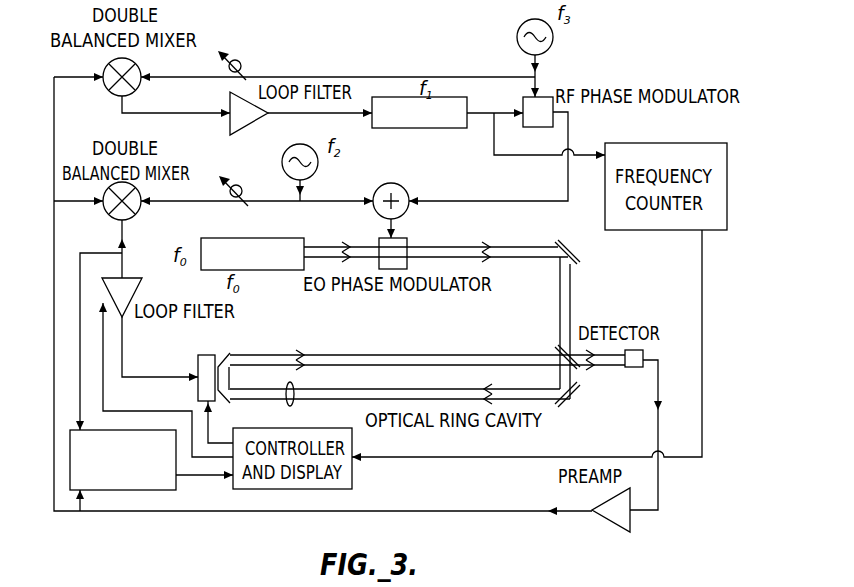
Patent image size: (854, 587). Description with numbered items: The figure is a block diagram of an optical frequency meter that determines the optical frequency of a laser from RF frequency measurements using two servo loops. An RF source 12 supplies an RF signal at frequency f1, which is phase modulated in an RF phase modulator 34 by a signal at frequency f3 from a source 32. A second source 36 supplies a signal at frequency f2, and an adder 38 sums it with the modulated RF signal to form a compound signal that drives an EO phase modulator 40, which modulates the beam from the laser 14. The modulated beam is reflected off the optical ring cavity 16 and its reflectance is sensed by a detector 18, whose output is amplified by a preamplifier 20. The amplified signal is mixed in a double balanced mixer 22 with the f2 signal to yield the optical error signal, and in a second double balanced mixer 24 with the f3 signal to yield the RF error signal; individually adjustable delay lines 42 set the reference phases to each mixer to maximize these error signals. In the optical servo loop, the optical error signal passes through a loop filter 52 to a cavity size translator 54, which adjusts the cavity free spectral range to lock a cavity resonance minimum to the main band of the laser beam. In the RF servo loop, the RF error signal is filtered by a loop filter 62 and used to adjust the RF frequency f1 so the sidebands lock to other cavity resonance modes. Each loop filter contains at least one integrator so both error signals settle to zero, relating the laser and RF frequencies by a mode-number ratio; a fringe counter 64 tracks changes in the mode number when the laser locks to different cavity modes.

The RF source 12 is at (468, 101).
The laser 14 is at (268, 238).
The optical ring cavity 16 is at (441, 349).
The detector 18 is at (643, 352).
The preamplifier 20 is at (604, 522).
The double balanced mixer 22 is at (137, 216).
The double balanced mixer 24 is at (103, 72).
The source 32 is at (519, 25).
The RF phase modulator 34 is at (530, 128).
The source 36 is at (284, 150).
The adder 38 is at (393, 184).
The EO phase modulator 40 is at (411, 242).
The delay lines 42 is at (242, 61).
The loop filter 52 is at (142, 281).
The cavity size translator 54 is at (209, 354).
The loop filter 62 is at (228, 102).
The fringe counter 64 is at (174, 491).